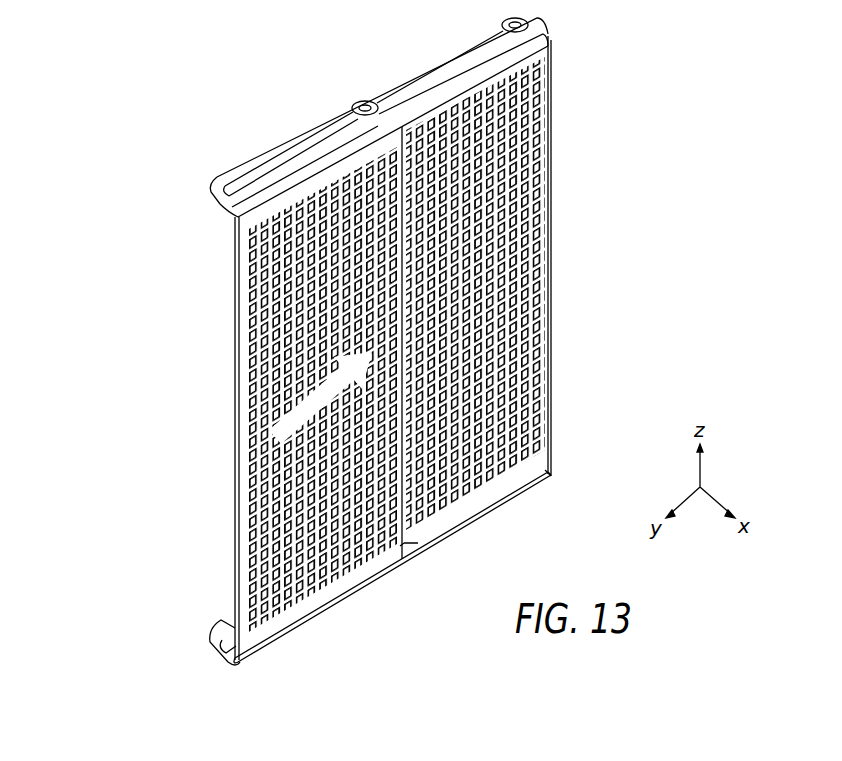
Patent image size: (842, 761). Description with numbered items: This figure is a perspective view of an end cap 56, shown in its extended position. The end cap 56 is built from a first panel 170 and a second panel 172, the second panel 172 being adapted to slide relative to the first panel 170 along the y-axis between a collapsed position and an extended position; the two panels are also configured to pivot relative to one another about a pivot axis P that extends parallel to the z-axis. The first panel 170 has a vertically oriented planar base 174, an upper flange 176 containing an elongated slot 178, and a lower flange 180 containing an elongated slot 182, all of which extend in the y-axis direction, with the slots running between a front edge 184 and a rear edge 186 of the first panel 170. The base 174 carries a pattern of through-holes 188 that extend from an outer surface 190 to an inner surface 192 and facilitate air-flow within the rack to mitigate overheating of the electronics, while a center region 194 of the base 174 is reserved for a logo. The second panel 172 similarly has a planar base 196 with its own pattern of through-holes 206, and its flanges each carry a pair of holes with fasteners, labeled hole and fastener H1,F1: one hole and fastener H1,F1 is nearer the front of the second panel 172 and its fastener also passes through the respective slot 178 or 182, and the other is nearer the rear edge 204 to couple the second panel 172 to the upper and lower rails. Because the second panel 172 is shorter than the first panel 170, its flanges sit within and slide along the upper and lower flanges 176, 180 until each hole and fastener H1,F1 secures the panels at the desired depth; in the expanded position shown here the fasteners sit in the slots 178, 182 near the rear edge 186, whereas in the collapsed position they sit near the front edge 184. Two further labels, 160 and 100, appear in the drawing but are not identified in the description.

The end cap 56 is at (130, 247).
The panel frame 160 is at (382, 88).
The upper flange 176 is at (214, 183).
The elongated slot 178 is at (254, 170).
The hole and fastener H1,F1 is at (352, 106).
The pivot axis P is at (366, 98).
The pattern of through-holes 188 is at (250, 306).
The planar base 196 is at (556, 272).
The center region 194 is at (262, 437).
The front edge 184 is at (236, 407).
The planar base 174 is at (236, 478).
The outer surface 190 is at (242, 497).
The inner surface 192 is at (236, 583).
The elongated slot 182 is at (222, 637).
The lower flange 180 is at (222, 652).
The rear edge 186 is at (430, 547).
The first panel 170 is at (322, 637).
The second panel 172 is at (494, 522).
The pattern of through-holes 206 is at (552, 200).
The rear edge 204 is at (552, 338).
The bottom right corner 100 is at (553, 478).